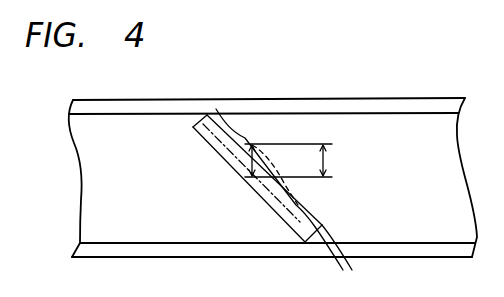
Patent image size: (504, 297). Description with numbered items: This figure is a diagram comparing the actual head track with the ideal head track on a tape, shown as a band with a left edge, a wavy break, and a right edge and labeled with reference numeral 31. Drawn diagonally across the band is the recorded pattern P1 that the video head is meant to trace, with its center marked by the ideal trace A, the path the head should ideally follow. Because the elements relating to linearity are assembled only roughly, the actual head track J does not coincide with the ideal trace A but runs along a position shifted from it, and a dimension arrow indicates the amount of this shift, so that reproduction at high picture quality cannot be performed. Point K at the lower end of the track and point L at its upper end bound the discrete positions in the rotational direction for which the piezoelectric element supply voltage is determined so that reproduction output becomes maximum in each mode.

The belt 31 is at (88, 166).
The point L is at (193, 128).
The ideal trace A is at (203, 124).
The actual head track J is at (216, 109).
The point K is at (305, 242).
The pattern P1 is at (250, 183).